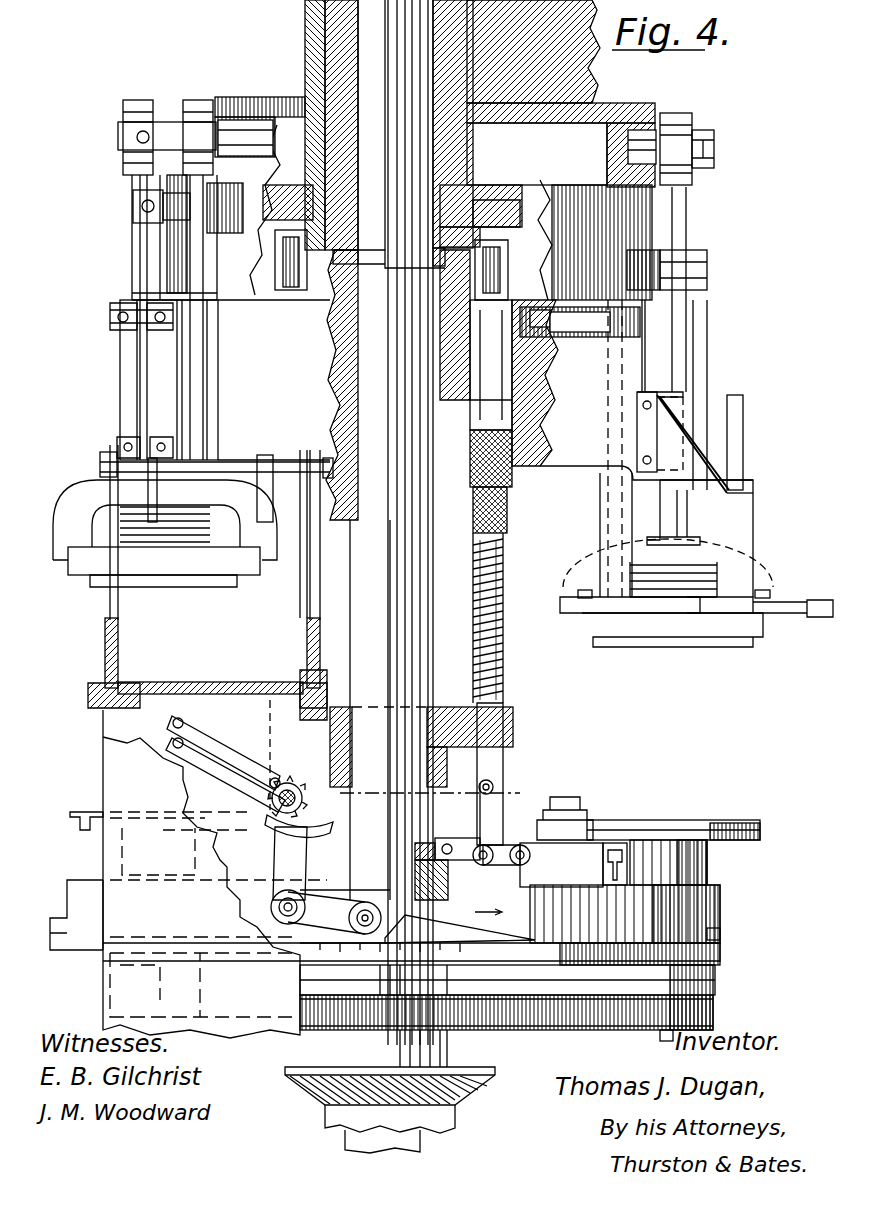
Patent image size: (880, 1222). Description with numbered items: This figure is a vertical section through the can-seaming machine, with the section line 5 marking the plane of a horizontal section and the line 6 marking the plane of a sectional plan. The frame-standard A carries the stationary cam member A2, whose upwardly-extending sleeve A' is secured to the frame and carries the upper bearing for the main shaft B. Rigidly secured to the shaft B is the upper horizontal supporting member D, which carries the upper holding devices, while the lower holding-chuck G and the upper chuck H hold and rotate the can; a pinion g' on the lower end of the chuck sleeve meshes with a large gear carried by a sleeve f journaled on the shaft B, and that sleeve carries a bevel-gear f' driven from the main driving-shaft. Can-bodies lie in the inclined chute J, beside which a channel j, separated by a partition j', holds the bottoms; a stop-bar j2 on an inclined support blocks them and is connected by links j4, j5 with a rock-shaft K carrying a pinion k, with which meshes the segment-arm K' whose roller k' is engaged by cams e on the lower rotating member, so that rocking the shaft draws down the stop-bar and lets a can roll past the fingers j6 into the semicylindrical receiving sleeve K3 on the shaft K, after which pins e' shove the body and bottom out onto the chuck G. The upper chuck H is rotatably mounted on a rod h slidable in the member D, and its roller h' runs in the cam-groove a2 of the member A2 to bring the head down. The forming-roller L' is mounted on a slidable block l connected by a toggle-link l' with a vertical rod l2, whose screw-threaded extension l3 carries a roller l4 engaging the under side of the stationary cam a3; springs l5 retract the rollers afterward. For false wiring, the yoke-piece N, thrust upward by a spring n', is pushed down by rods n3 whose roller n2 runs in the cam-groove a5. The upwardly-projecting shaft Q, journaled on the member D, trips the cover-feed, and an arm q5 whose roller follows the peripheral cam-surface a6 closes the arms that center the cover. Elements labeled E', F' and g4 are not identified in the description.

The frame-standard A is at (379, 519).
The sleeve A' is at (363, 134).
The stationary cam member A2 is at (532, 122).
The cam-groove a2 is at (393, 245).
The stationary cam a3 is at (290, 200).
The cam-groove a5 is at (640, 130).
The peripheral cam-surface a6 is at (232, 318).
The main shaft B is at (395, 522).
The upper supporting member D is at (436, 575).
The base plate E' is at (385, 920).
The cam e is at (638, 902).
The pins e' is at (417, 918).
The gear plate F' is at (507, 979).
The sleeve f is at (506, 1031).
The bevel-gear f' is at (390, 1090).
The lower holding-chuck G is at (414, 824).
The pinion g' is at (707, 995).
The gear lug g4 is at (660, 1035).
The upper chuck H is at (370, 559).
The rod h is at (430, 360).
The roller h' is at (667, 270).
The chute J is at (216, 528).
The channel j is at (320, 564).
The partition j' is at (281, 597).
The stop-bar j2 is at (178, 668).
The link j4 is at (243, 762).
The link j5 is at (230, 790).
The fingers j6 is at (272, 492).
The rock-shaft K is at (319, 763).
The segment-arm K' is at (304, 880).
The receiving sleeve K3 is at (285, 755).
The pinion k is at (299, 807).
The roller k' is at (376, 907).
The forming-roller L' is at (580, 808).
The slidable block l is at (509, 859).
The toggle-link l' is at (499, 774).
The vertical rod l2 is at (503, 612).
The extension l3 is at (512, 470).
The roller l4 is at (283, 255).
The spring l5 is at (500, 648).
The yoke-piece N is at (767, 577).
The spring n' is at (418, 552).
The roller n2 is at (175, 118).
The vertically-movable rods n3 is at (140, 253).
The shaft Q is at (737, 445).
The arm q5 is at (612, 355).
The section line 5 is at (100, 303).
The section line 6 is at (778, 767).